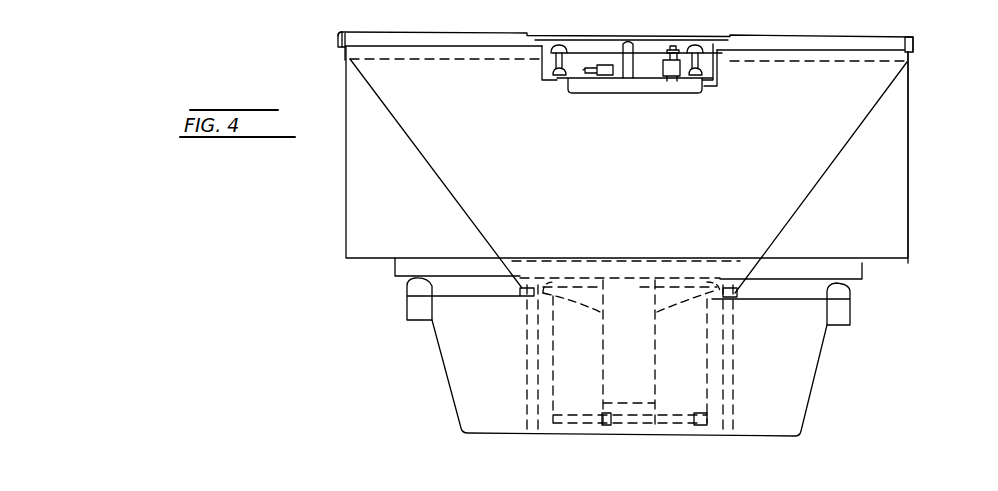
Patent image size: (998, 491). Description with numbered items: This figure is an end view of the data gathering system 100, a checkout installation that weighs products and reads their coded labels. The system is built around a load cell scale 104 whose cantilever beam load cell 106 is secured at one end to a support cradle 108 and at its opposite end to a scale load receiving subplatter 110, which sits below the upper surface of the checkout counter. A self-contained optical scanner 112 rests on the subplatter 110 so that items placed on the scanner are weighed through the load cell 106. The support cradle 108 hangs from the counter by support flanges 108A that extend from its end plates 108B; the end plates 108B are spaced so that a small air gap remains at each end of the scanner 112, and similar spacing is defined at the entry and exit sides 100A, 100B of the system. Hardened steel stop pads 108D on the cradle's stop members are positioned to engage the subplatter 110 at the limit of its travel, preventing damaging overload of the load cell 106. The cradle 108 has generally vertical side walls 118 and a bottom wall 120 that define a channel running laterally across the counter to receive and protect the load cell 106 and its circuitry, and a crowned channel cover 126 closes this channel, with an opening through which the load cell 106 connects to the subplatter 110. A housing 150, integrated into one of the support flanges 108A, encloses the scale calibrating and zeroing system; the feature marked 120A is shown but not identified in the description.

The data gathering system 100 is at (365, 275).
The entry side 100A is at (340, 41).
The exit side 100B is at (914, 48).
The load cell scale 104 is at (577, 246).
The cantilever beam load cell 106 is at (618, 364).
The support cradle 108 is at (446, 395).
The support flanges 108A is at (876, 40).
The end plates 108B is at (683, 171).
The stop pads 108D is at (405, 286).
The scale load receiving subplatter 110 is at (805, 267).
The optical scanner 112 is at (902, 172).
The side walls 118 is at (525, 345).
The bottom wall 120 is at (612, 434).
The foot 120A is at (700, 435).
The crowned channel cover 126 is at (645, 270).
The housing 150 is at (575, 93).